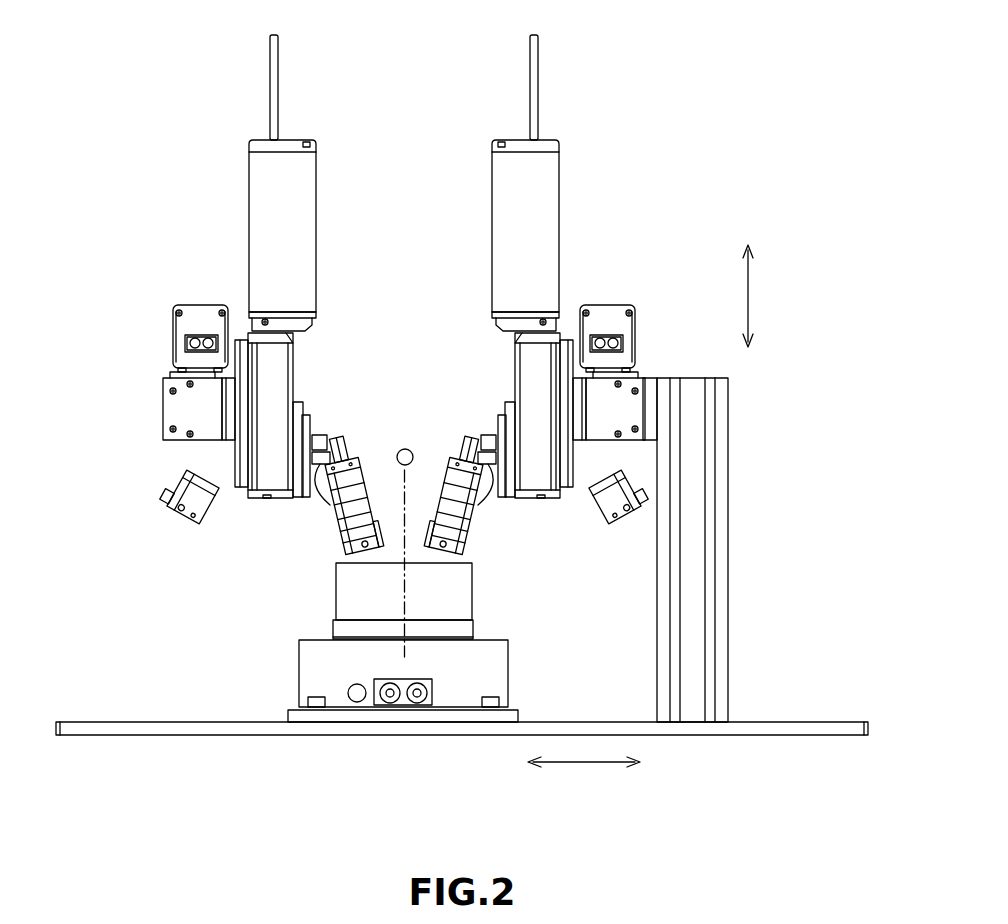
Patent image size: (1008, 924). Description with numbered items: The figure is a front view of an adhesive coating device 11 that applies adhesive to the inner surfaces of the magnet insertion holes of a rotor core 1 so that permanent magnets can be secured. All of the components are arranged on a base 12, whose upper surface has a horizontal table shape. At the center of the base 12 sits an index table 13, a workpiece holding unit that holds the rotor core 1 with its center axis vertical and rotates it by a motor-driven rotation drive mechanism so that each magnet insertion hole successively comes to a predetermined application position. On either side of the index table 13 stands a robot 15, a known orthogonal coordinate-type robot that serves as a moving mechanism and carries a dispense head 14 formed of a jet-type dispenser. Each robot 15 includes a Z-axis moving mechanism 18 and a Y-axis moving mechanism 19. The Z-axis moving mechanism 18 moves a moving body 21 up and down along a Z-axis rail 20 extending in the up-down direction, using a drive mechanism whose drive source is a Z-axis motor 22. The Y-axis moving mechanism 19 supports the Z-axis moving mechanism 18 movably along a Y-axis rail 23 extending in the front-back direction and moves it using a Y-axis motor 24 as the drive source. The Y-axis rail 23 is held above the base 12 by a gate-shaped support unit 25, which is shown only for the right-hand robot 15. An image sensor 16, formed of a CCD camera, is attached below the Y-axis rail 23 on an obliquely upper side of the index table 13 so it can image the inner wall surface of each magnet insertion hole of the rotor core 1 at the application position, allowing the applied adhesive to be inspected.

The rotor core 1 is at (472, 595).
The adhesive coating device 11 is at (614, 159).
The base 12 is at (783, 722).
The index table 13 is at (299, 660).
The dispense head 14 is at (332, 531).
The robot 15 is at (206, 204).
The image sensor 16 is at (208, 525).
The Z-axis moving mechanism 18 is at (327, 172).
The Y-axis moving mechanism 19 is at (200, 303).
The Z-axis rail 20 is at (283, 370).
The moving body 21 is at (310, 428).
The Z-axis motor 22 is at (302, 235).
The Y-axis rail 23 is at (232, 413).
The Y-axis motor 24 is at (177, 333).
The support unit 25 is at (729, 466).